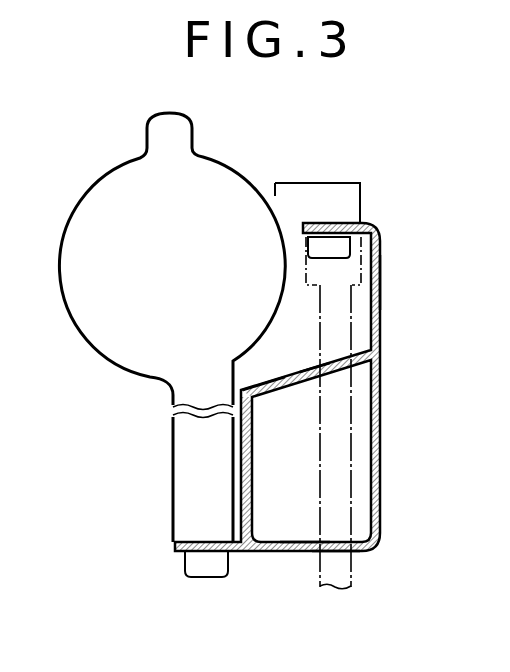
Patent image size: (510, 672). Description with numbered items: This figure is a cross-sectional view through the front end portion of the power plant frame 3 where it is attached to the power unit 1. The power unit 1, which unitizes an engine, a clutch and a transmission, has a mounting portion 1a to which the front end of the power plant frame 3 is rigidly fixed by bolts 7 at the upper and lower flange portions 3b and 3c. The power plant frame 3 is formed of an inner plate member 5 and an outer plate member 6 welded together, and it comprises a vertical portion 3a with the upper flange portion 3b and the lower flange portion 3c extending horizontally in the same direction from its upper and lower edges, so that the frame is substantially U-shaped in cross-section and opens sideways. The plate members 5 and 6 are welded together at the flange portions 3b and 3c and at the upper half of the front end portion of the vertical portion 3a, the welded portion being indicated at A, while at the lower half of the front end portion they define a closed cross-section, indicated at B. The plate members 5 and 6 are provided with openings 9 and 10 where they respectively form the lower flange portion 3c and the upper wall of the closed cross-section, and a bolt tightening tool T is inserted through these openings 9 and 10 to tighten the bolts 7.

The power unit 1 is at (237, 173).
The mounting portion 1a is at (173, 478).
The power plant frame 3 is at (283, 390).
The vertical portion 3a is at (378, 338).
The upper flange portion 3b is at (332, 222).
The lower flange portion 3c is at (175, 547).
The inner plate member 5 is at (383, 457).
The outer plate member 6 is at (263, 380).
The bolt 7 is at (346, 247).
The opening 9 is at (312, 552).
The opening 10 is at (312, 382).
The welded portion A is at (382, 286).
The lower chamber B is at (305, 517).
The bolt tightening tool T is at (348, 570).